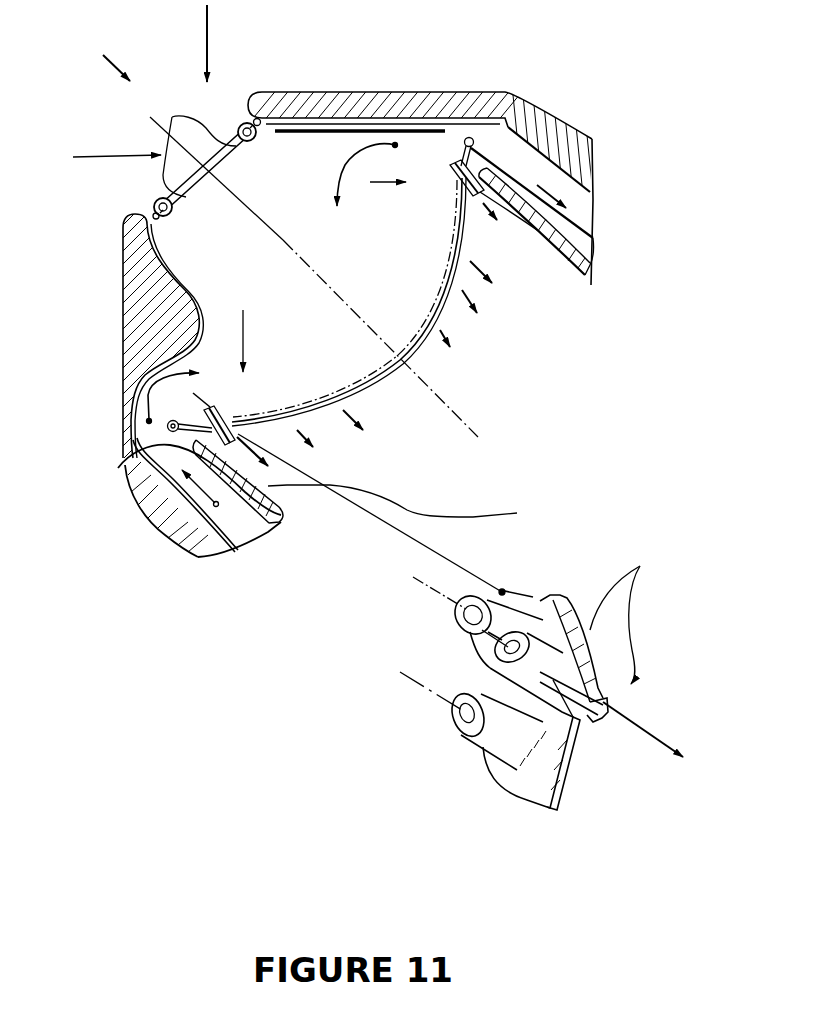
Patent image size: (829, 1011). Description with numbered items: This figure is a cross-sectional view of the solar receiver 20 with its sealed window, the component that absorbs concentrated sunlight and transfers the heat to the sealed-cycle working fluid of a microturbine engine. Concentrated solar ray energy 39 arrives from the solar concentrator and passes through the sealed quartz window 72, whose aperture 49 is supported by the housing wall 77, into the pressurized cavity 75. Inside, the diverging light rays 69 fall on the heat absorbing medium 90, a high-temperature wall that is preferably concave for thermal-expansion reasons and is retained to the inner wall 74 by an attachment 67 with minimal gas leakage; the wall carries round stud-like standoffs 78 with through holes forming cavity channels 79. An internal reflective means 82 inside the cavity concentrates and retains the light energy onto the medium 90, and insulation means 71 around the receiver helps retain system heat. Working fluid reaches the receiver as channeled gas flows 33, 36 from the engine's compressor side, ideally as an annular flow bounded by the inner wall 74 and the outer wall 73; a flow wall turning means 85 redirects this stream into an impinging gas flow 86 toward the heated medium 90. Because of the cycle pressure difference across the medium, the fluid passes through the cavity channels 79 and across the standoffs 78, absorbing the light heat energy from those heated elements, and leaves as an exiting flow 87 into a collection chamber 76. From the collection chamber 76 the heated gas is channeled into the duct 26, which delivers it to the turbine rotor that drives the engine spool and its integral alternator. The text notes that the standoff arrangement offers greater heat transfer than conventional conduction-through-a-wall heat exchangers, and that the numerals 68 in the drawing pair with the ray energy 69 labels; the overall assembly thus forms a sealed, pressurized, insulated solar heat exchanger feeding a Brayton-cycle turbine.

The solar receiver 20 is at (599, 122).
The duct 26 is at (521, 673).
The channeled gas flow 33 is at (236, 498).
The fluid flow 36 is at (703, 215).
The concentrated solar ray energy 39 is at (107, 56).
The aperture 49 is at (207, 155).
The attachment 67 is at (472, 137).
The airflow 68 is at (307, 302).
The diverging light rays 69 is at (319, 258).
The insulation means 71 is at (133, 270).
The sealed quartz window 72 is at (188, 189).
The outer wall 73 is at (150, 436).
The inner wall 74 is at (120, 466).
The pressurized cavity 75 is at (349, 302).
The collection chamber 76 is at (583, 278).
The housing wall 77 is at (445, 124).
The standoffs 78 is at (585, 275).
The cavity channels 79 is at (605, 718).
The internal reflective means 82 is at (322, 126).
The flow wall turning means 85 is at (148, 350).
The impinging gas flow 86 is at (150, 385).
The exiting flow 87 is at (617, 790).
The heat absorbing medium 90 is at (455, 286).